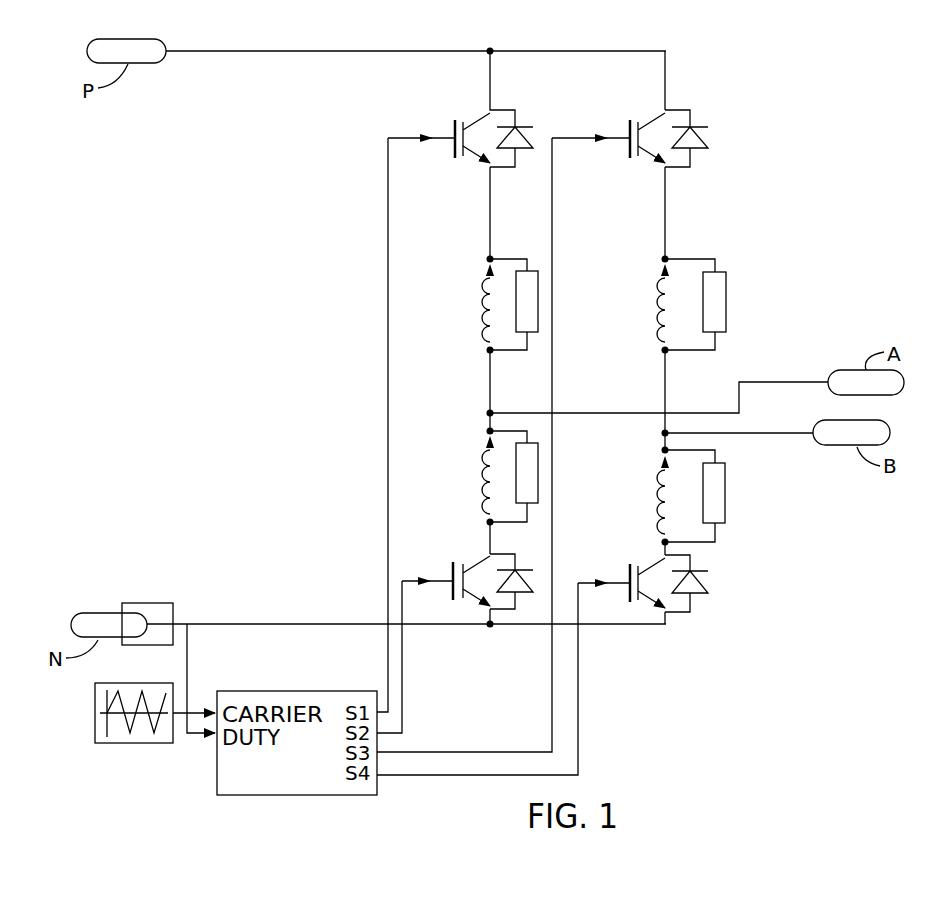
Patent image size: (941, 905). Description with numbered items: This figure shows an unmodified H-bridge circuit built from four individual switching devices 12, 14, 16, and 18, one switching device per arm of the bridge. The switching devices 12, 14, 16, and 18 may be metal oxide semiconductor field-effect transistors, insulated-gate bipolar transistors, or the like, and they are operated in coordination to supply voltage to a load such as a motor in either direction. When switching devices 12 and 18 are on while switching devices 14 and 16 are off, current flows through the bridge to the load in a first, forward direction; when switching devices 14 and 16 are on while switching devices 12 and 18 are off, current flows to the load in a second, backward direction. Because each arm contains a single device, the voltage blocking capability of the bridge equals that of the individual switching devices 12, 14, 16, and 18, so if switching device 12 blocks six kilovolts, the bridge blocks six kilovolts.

The switching device 12 is at (450, 106).
The switching device 14 is at (452, 557).
The switching device 16 is at (640, 104).
The switching device 18 is at (630, 557).